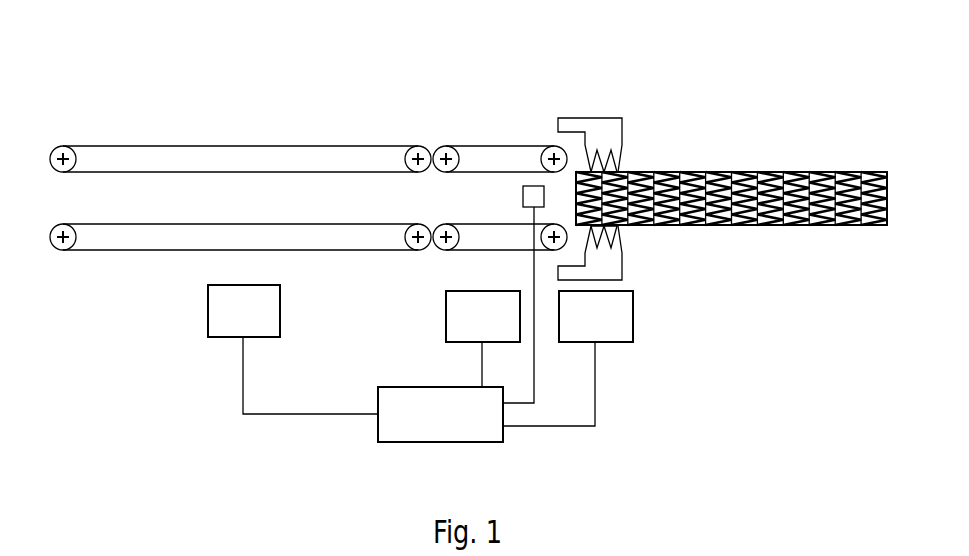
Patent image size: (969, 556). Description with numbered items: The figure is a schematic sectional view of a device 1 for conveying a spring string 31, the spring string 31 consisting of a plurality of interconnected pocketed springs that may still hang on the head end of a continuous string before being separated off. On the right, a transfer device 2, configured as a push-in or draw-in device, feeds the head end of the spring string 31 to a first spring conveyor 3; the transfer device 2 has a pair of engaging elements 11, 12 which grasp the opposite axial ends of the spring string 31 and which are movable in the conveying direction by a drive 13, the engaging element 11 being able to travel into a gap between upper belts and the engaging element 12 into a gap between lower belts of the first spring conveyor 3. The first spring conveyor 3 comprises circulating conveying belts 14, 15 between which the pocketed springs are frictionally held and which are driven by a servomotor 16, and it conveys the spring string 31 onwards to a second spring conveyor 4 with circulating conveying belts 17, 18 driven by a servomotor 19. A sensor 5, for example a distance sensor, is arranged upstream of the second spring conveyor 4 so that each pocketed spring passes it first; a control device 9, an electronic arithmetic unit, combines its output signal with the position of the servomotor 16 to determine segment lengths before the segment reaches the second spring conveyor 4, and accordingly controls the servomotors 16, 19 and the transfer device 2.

The device 1 is at (640, 82).
The transfer device 2 is at (598, 108).
The first spring conveyor 3 is at (493, 109).
The second spring conveyor 4 is at (205, 108).
The sensor 5 is at (523, 198).
The control device 9 is at (503, 442).
The engaging element 11 is at (620, 140).
The engaging element 12 is at (620, 262).
The drive 13 is at (633, 342).
The conveying belt 14 is at (484, 146).
The conveying belt 15 is at (477, 250).
The servomotor 16 is at (447, 341).
The conveying belt 17 is at (108, 145).
The conveying belt 18 is at (104, 250).
The servomotor 19 is at (212, 336).
The spring string 31 is at (790, 162).